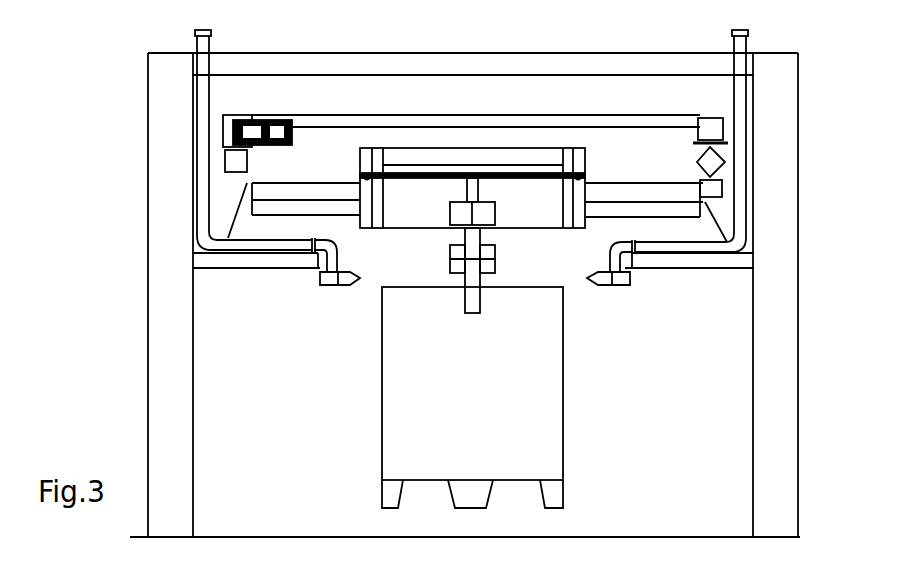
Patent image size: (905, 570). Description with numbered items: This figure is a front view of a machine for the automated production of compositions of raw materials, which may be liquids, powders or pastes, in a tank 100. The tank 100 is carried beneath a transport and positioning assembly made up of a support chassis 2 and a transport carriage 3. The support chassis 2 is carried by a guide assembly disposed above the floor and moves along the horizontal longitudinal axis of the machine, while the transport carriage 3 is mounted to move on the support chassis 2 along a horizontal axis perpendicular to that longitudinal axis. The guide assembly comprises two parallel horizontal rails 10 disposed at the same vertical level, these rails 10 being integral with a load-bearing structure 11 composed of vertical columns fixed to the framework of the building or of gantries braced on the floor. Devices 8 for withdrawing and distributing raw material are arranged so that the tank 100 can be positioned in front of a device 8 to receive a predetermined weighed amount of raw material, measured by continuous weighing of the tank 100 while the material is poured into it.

The load-bearing structure 11 is at (452, 65).
The horizontal rails 10 is at (233, 162).
The support chassis 2 is at (678, 208).
The transport carriage 3 is at (410, 210).
The device for withdrawing and distributing raw material 8 is at (330, 285).
The tank 100 is at (542, 385).